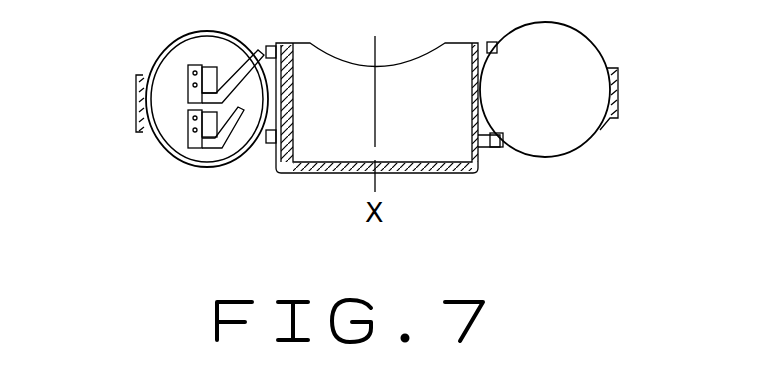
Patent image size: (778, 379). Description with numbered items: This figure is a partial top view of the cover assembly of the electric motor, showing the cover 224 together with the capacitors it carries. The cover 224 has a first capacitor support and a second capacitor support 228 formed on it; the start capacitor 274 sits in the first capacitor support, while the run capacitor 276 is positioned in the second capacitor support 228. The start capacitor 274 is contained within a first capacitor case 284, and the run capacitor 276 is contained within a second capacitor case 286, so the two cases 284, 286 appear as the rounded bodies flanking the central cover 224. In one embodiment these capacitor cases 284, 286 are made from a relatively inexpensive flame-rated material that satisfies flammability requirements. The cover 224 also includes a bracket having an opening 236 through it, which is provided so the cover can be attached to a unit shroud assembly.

The cover 224 is at (312, 175).
The second capacitor support 228 is at (497, 150).
The opening 236 is at (257, 161).
The start capacitor 274 is at (160, 70).
The first capacitor case 284 is at (160, 128).
The run capacitor 276 is at (572, 56).
The second capacitor case 286 is at (574, 124).